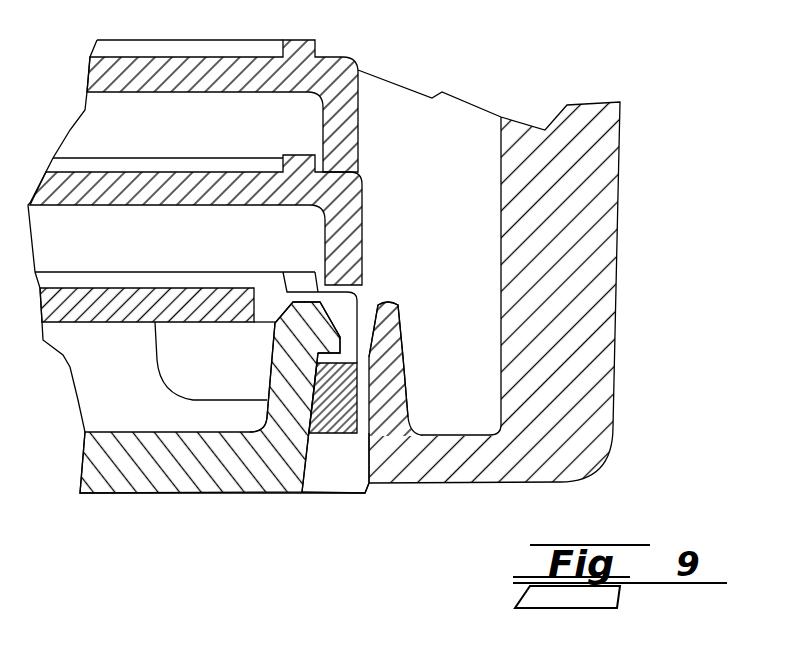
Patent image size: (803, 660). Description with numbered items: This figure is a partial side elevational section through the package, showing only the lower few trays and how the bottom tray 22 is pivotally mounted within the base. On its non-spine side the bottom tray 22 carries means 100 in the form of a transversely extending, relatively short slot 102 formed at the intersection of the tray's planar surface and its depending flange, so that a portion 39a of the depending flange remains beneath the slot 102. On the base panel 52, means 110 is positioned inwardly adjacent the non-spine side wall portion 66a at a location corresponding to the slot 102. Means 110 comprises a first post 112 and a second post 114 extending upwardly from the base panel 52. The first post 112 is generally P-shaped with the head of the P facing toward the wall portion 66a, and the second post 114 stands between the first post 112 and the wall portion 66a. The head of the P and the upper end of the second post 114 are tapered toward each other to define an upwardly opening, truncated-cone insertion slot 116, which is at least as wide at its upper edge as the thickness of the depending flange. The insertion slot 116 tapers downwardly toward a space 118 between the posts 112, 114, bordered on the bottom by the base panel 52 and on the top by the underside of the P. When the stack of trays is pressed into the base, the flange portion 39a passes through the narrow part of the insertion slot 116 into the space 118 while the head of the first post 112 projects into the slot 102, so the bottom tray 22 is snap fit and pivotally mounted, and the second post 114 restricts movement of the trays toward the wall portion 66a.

The bottom tray 22 is at (180, 307).
The base panel 52 is at (153, 493).
The non-spine side wall portion 66a is at (592, 368).
The means on the non-spine side of bottom tray 100 is at (340, 313).
The slot 102 is at (350, 353).
The means of the base panel 110 is at (283, 352).
The first post 112 is at (300, 398).
The second post 114 is at (393, 367).
The insertion slot 116 is at (367, 313).
The space 118 is at (313, 432).
The portion of the depending flange 39a is at (340, 422).